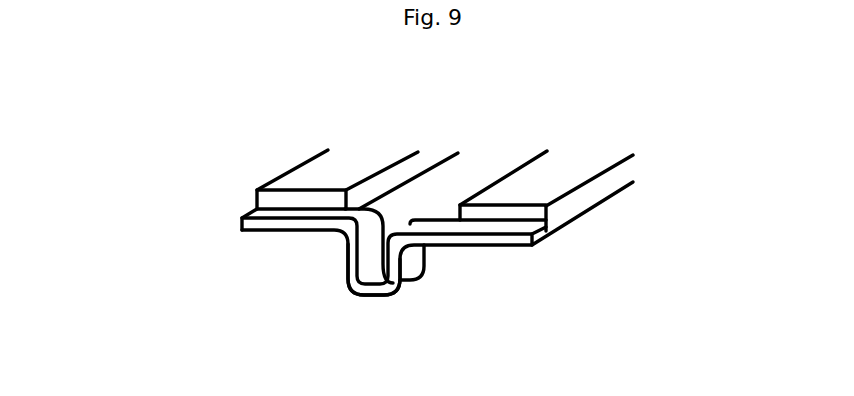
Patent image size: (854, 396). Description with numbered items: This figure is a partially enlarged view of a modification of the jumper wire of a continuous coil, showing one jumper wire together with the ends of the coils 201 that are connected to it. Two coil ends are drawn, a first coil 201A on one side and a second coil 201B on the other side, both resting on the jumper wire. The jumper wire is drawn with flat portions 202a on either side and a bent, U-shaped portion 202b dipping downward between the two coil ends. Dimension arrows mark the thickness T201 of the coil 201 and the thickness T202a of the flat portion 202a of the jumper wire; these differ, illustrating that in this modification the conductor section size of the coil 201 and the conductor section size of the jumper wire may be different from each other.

The coil 201 is at (469, 170).
The coil 201A is at (320, 155).
The coil 201B is at (620, 179).
The flat portion of joining sheet 202a is at (308, 216).
The bent (U-shaped) portion of joining sheet 202b is at (372, 228).
The thickness of flat portion 202a T202a is at (240, 225).
The thickness of metal plate 201 T201 is at (683, 193).